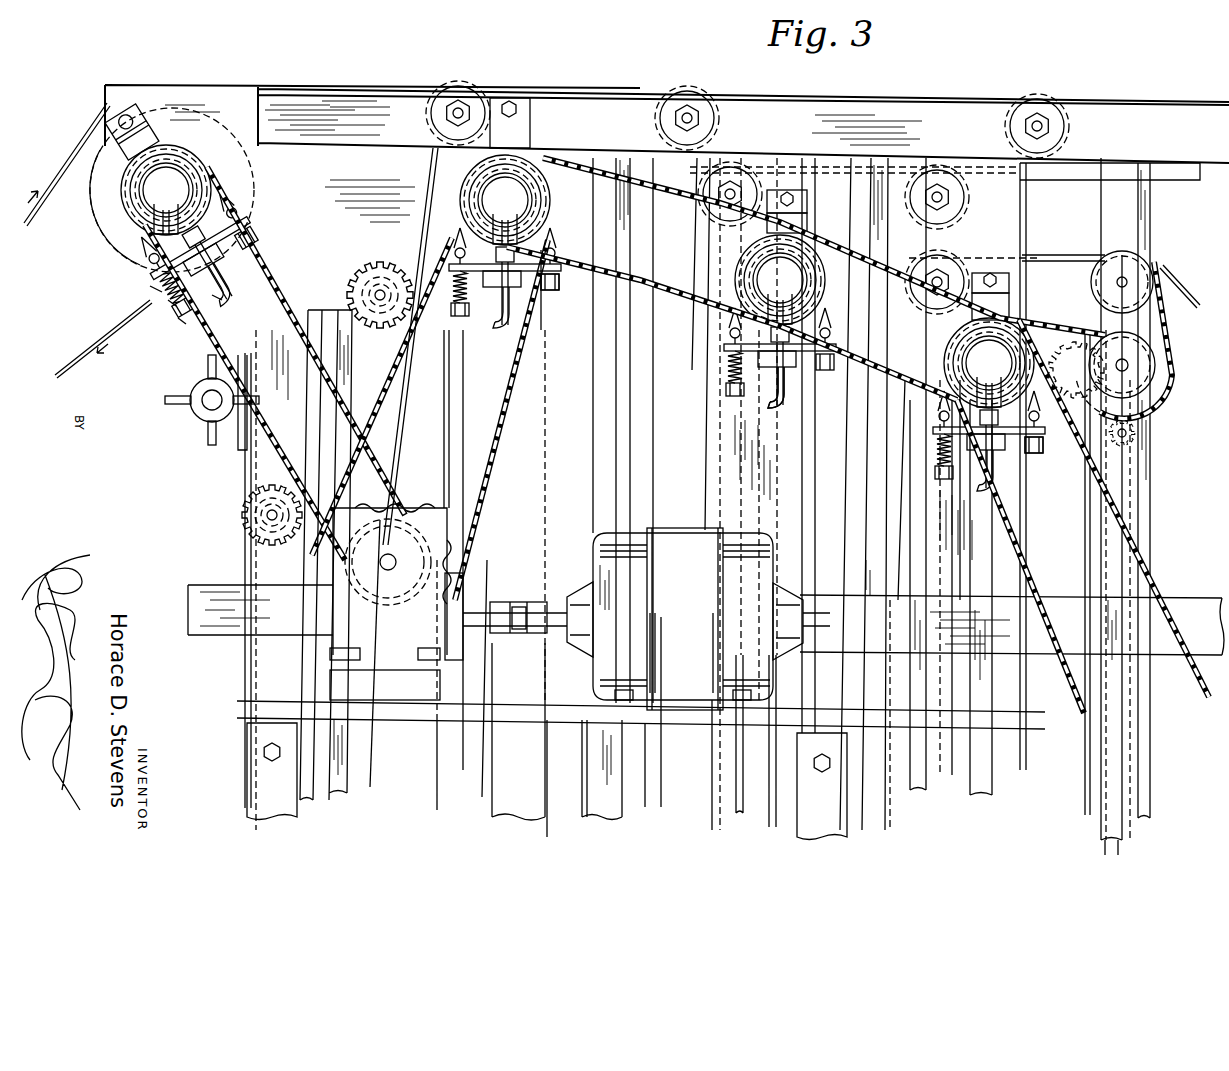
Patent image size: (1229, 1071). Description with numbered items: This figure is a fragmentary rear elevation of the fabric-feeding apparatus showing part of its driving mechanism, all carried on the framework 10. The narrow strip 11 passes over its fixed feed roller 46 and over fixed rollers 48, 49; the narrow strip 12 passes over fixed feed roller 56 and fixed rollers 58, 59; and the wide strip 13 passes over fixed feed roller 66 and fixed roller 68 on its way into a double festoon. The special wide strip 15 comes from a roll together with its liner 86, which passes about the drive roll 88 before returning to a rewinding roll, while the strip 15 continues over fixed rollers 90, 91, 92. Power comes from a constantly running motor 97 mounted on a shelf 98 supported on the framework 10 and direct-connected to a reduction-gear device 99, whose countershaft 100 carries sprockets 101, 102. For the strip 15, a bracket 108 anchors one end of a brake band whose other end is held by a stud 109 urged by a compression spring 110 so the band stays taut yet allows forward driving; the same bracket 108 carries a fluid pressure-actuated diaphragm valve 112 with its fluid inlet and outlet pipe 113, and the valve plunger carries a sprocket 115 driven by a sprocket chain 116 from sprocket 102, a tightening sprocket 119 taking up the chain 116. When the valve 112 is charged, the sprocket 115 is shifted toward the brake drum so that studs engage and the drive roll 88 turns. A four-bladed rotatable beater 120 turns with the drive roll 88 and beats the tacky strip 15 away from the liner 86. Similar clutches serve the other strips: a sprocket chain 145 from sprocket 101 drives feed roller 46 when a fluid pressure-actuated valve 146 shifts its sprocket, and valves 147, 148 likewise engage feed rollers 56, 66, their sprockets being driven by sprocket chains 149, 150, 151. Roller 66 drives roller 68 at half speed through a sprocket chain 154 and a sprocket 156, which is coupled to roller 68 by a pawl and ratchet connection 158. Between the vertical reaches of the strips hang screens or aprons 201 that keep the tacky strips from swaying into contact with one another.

The framework 10 is at (355, 108).
The narrow strip 11 is at (1172, 181).
The narrow strip 12 is at (1170, 278).
The wide strip 13 is at (1152, 472).
The special wide strip 15 is at (75, 178).
The fixed roller 46 is at (535, 205).
The fixed roller 48 is at (706, 186).
The fixed roller 49 is at (925, 208).
The fixed roller 56 is at (745, 255).
The fixed roller 58 is at (1003, 247).
The fixed roller 59 is at (1160, 305).
The fixed roller 66 is at (985, 352).
The fixed roller 68 is at (1160, 350).
The liner 86 is at (27, 232).
The drive roll 88 is at (118, 238).
The fixed roller 90 is at (438, 95).
The fixed roller 91 is at (686, 90).
The fixed roller 92 is at (1025, 95).
The motor 97 is at (655, 540).
The shelf 98 is at (682, 725).
The reduction-gear device 99 is at (350, 628).
The countershaft 100 is at (388, 562).
The sprocket 101 is at (417, 507).
The sprocket 102 is at (372, 490).
The bracket 108 is at (152, 290).
The stud 109 is at (182, 325).
The compression spring 110 is at (172, 300).
The fluid pressure-actuated diaphragm valve 112 is at (122, 195).
The fluid inlet and outlet pipe 113 is at (218, 300).
The sprocket 115 is at (125, 245).
The sprocket chain 116 is at (282, 455).
The sprocket 119 is at (250, 512).
The rotatable beater 120 is at (190, 400).
The sprocket chain 145 is at (508, 388).
The fluid pressure-actuated valve 146 is at (520, 240).
The fluid pressure-actuated valve 147 is at (755, 295).
The fluid pressure-actuated valve 148 is at (1028, 332).
The sprocket chain 149 is at (575, 277).
The sprocket chain 150 is at (905, 310).
The sprocket chain 151 is at (1150, 572).
The sprocket chain 154 is at (1078, 437).
The sprocket 156 is at (1168, 392).
The pawl and ratchet connection 158 is at (1088, 335).
The screens or aprons 201 is at (483, 795).